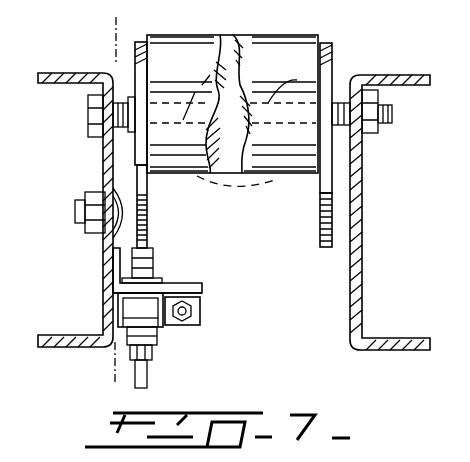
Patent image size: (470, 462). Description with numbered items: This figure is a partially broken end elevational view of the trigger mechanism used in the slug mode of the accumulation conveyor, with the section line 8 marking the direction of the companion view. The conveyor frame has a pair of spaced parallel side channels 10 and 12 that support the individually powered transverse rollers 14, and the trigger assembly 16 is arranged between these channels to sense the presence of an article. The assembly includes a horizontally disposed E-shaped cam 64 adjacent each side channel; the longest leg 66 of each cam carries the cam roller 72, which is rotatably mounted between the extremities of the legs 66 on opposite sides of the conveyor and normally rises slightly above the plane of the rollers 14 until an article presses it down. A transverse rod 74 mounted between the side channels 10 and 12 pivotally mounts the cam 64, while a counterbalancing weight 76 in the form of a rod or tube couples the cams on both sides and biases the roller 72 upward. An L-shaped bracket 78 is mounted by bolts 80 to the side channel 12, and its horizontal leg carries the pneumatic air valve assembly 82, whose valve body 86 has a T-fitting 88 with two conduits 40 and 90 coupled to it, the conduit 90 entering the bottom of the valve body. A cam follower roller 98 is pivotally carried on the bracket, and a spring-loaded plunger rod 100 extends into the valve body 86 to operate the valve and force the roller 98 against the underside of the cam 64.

The section line 8- 8 is at (150, 24).
The side channel 10 is at (395, 337).
The side channel 12 is at (62, 333).
The rollers 14 is at (173, 174).
The trigger assembly 16 is at (222, 275).
The conduit 40 is at (200, 302).
The E-shaped cam 64 is at (147, 178).
The leg 66 is at (138, 72).
The cam roller 72 is at (258, 50).
The rod 74 is at (130, 128).
The counterbalancing weight 76 is at (237, 121).
The L-shaped bracket 78 is at (173, 282).
The bolts 80 is at (75, 210).
The pneumatic air valve assembly 82 is at (170, 334).
The valve body 86 is at (140, 310).
The T-fitting 88 is at (200, 312).
The conduit 90 is at (143, 372).
The cam roller 98 is at (143, 257).
The plunger rod 100 is at (142, 270).